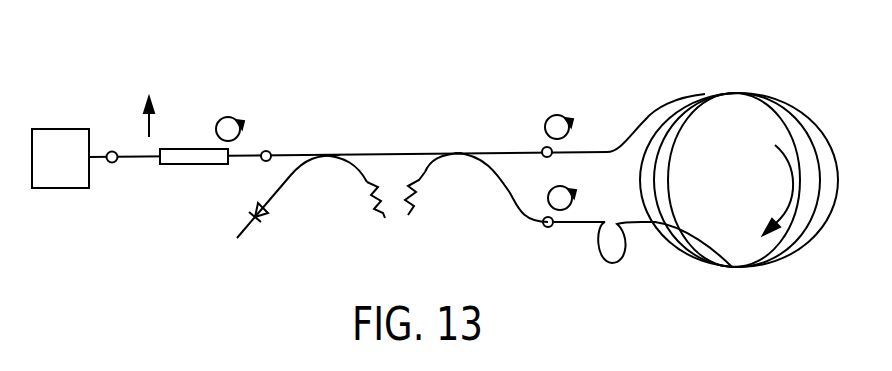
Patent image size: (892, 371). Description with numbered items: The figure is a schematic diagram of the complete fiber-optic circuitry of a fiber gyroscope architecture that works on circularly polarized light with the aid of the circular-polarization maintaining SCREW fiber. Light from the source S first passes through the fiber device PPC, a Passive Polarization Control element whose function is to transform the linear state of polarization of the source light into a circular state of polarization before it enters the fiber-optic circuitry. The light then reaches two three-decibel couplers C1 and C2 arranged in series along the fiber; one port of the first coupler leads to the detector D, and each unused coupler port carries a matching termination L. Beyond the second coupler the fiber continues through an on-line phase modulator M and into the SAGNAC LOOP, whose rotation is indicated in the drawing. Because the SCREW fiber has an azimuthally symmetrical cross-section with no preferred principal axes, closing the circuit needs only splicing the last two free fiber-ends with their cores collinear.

The source S is at (60, 158).
The Passive Polarization Control PPC is at (189, 184).
The detector D is at (288, 206).
The 3 dB coupler C1 is at (343, 139).
The 3 dB coupler C2 is at (486, 159).
The matching termination L is at (395, 215).
The on-line phase modulator M is at (642, 264).
The Sagnac loop SAGNAC LOOP is at (807, 104).